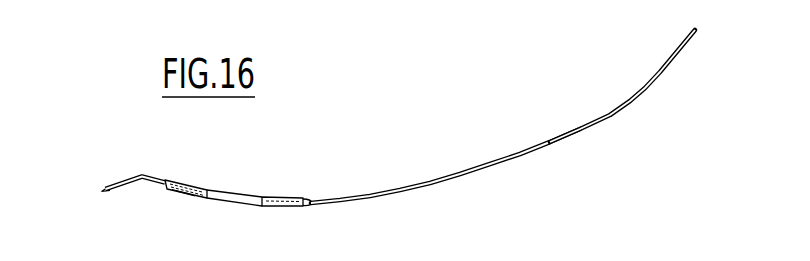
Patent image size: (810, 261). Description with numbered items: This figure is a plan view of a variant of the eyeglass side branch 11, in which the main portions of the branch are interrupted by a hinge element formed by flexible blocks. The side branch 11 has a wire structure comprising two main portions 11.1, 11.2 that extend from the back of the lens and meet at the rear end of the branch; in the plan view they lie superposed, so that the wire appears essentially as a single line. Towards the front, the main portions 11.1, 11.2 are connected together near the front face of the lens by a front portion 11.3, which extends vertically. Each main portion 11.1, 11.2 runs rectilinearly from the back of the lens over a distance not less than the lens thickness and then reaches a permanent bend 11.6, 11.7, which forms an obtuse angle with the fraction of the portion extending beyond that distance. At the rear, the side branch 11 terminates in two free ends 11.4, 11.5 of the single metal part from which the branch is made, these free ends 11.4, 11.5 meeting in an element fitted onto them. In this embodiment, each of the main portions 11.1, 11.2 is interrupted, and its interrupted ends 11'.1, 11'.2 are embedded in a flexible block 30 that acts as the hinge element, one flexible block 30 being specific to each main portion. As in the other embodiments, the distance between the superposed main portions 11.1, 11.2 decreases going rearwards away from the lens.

The side branch 11 is at (373, 131).
The main portion 11.1 is at (445, 166).
The main portion 11.2 is at (433, 187).
The front portion 11.3 is at (102, 193).
The free end 11.4 is at (633, 88).
The free end 11.5 is at (661, 77).
The permanent bend 11.6 is at (124, 153).
The permanent bend 11.7 is at (144, 173).
The interrupted end 11'.1 is at (216, 164).
The interrupted end 11'.2 is at (318, 170).
The flexible block 30 is at (228, 201).